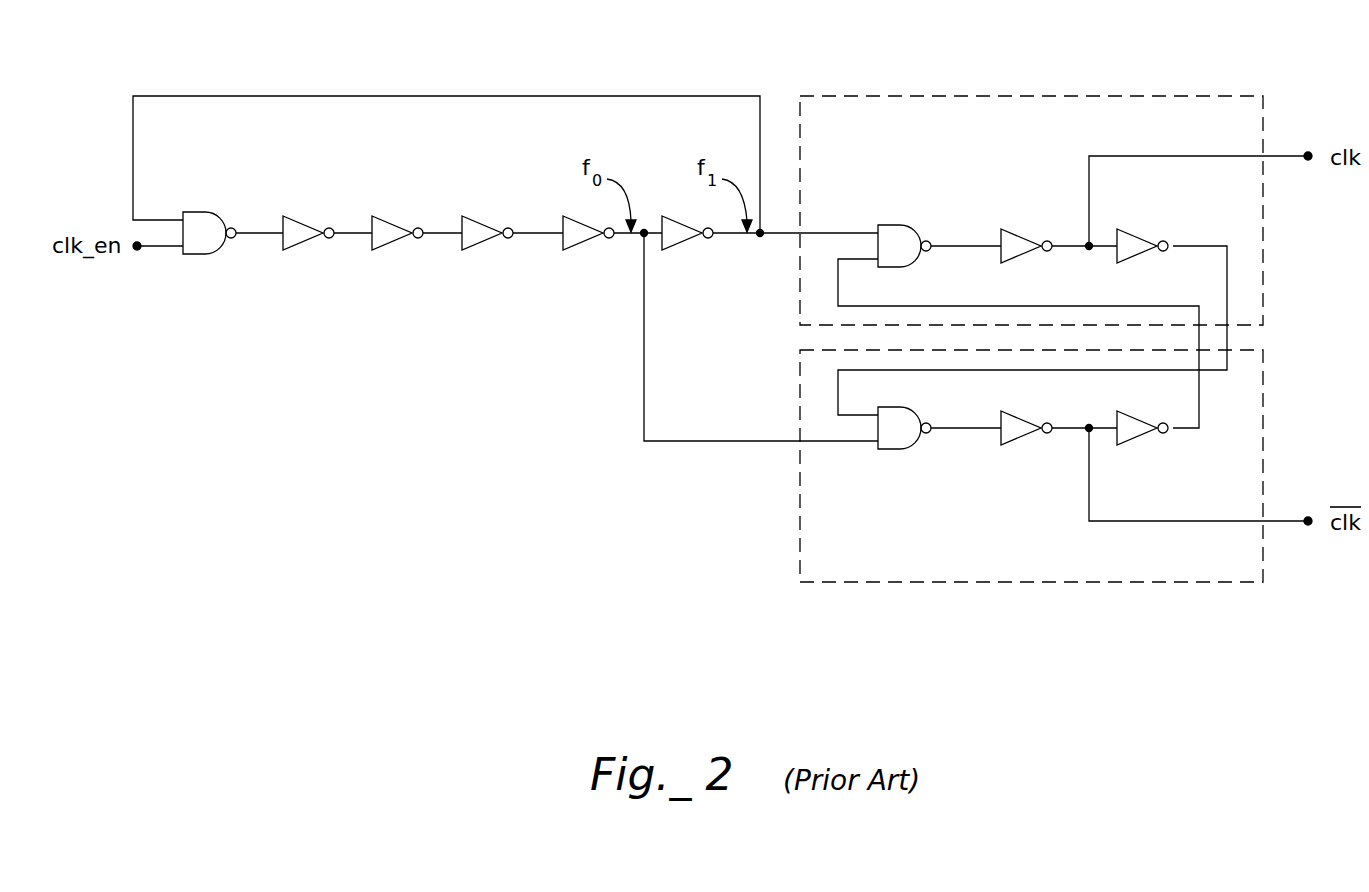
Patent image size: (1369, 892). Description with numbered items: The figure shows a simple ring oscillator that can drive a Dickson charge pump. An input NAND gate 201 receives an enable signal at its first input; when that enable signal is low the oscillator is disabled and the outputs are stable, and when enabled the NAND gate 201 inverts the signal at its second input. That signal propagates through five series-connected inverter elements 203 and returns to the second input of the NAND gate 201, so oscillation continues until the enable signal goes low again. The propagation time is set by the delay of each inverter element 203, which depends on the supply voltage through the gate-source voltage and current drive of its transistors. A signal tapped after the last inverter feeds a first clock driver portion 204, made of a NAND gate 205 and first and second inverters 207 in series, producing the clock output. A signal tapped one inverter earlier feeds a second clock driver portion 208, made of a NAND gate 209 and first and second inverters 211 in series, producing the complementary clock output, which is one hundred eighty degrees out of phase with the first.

The input NAND gate 201 is at (204, 253).
The inverter elements 203 is at (303, 243).
The first clock driver portion 204 is at (846, 125).
The NAND gate 205 is at (903, 225).
The first and second inverters 207 is at (1023, 237).
The second clock driver portion 208 is at (846, 571).
The NAND gate 209 is at (903, 450).
The first and second inverters 211 is at (1023, 437).